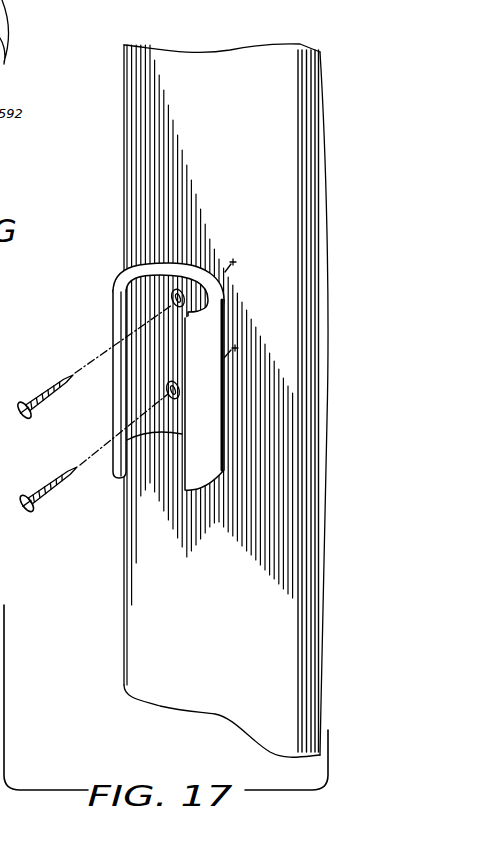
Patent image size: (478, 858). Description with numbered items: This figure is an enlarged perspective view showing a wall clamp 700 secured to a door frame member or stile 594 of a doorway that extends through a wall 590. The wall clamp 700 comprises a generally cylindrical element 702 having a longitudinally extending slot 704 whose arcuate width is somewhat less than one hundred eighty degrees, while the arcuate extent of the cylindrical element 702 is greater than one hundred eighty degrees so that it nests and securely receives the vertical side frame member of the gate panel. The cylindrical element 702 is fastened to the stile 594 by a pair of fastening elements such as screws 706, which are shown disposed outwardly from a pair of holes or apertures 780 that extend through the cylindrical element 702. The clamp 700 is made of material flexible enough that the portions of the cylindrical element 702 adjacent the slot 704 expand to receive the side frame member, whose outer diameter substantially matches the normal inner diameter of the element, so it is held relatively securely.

The wall 590 is at (311, 53).
The side door frame member 594 is at (234, 99).
The wall clamp 700 is at (167, 373).
The cylindrical element 702 is at (205, 327).
The longitudinally extending slot 704 is at (113, 312).
The screw 706 is at (62, 468).
The mounting holes 780 is at (166, 352).